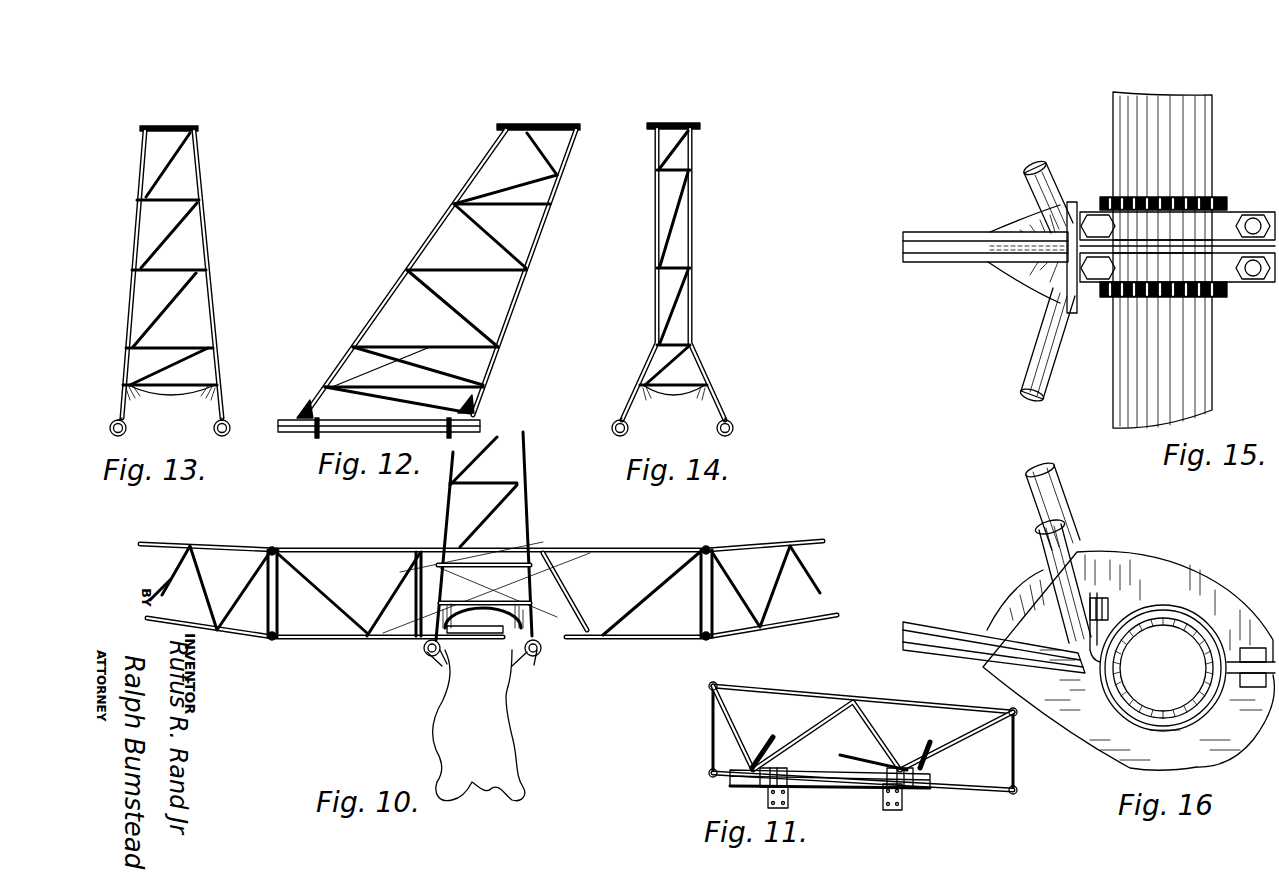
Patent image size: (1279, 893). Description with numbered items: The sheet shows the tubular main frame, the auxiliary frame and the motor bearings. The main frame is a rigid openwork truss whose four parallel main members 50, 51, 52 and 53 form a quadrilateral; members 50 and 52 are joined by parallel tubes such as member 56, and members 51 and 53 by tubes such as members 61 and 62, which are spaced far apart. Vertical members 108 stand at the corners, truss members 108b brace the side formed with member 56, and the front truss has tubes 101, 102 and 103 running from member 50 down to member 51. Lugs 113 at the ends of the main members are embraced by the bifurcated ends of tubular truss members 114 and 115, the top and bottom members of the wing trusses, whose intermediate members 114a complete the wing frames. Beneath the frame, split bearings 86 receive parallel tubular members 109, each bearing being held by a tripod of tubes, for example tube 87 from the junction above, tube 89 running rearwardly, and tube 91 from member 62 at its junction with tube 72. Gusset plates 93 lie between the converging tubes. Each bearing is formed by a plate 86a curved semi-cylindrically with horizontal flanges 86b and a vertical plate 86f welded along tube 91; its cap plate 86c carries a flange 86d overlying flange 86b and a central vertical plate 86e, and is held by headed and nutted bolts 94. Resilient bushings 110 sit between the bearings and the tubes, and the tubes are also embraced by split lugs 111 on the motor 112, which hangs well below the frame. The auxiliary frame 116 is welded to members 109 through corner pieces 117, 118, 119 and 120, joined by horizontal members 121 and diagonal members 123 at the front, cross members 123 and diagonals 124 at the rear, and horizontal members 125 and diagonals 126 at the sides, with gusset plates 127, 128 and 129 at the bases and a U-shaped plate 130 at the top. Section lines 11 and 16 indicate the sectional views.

In FIG. 10, the section line 11 is at (455, 545).
In FIG. 15, the section line 16 is at (1278, 393).
In FIG. 10, the main member 50 is at (590, 548).
In FIG. 11, the main member 50 is at (709, 677).
In FIG. 10, the main member 51 is at (635, 642).
In FIG. 11, the main member 51 is at (708, 775).
In FIG. 11, the main member 52 is at (1018, 713).
In FIG. 11, the main member 53 is at (1018, 790).
In FIG. 11, the connecting member 56 is at (845, 698).
In FIG. 10, the connecting member 61 is at (592, 640).
In FIG. 10, the connecting member 62 is at (370, 640).
In FIG. 10, the tube 72 is at (305, 640).
In FIG. 16, the split bearing 86 is at (1128, 671).
In FIG. 11, the split bearing 86 is at (760, 790).
In FIG. 15, the plate 86a is at (1073, 205).
In FIG. 16, the plate 86a is at (1190, 762).
In FIG. 16, the horizontal flange 86b is at (1265, 722).
In FIG. 16, the cap plate 86c is at (1200, 607).
In FIG. 15, the flange 86d is at (1268, 290).
In FIG. 16, the flange 86d is at (1264, 607).
In FIG. 15, the central vertical plate 86e is at (1177, 247).
In FIG. 16, the central vertical plate 86e is at (1185, 582).
In FIG. 16, the vertical plate 86f is at (1122, 755).
In FIG. 15, the tube 87 is at (1043, 160).
In FIG. 16, the tube 87 is at (1053, 478).
In FIG. 15, the tube 89 is at (1040, 350).
In FIG. 16, the tube 89 is at (1058, 536).
In FIG. 15, the tube 91 is at (908, 262).
In FIG. 16, the tube 91 is at (935, 630).
In FIG. 15, the gusset plate 93 is at (1040, 212).
In FIG. 16, the gusset plate 93 is at (1030, 605).
In FIG. 15, the bolt 94 is at (1248, 215).
In FIG. 16, the bolt 94 is at (1098, 598).
In FIG. 10, the tube 101 is at (322, 588).
In FIG. 10, the tube 102 is at (380, 598).
In FIG. 10, the tube 103 is at (568, 588).
In FIG. 10, the vertical member 108 is at (285, 583).
In FIG. 11, the vertical member 108 is at (710, 725).
In FIG. 11, the truss member 108b is at (730, 722).
In FIG. 13, the tubular member 109 is at (213, 428).
In FIG. 12, the tubular member 109 is at (378, 433).
In FIG. 14, the tubular member 109 is at (716, 428).
In FIG. 15, the tubular member 109 is at (1212, 338).
In FIG. 10, the tubular member 109 is at (424, 650).
In FIG. 11, the tubular member 109 is at (798, 787).
In FIG. 15, the tubular bushing 110 is at (1215, 292).
In FIG. 16, the tubular bushing 110 is at (1150, 612).
In FIG. 10, the bearing lug 111 is at (432, 658).
In FIG. 11, the bearing lug 111 is at (788, 806).
In FIG. 10, the motor 112 is at (497, 710).
In FIG. 10, the lug 113 is at (274, 546).
In FIG. 10, the tubular truss member 114 is at (232, 540).
In FIG. 10, the intermediate member 114a is at (183, 575).
In FIG. 10, the tubular truss member 115 is at (200, 630).
In FIG. 12, the auxiliary frame 116 is at (624, 313).
In FIG. 13, the corner piece 117 is at (210, 292).
In FIG. 12, the corner piece 117 is at (422, 250).
In FIG. 10, the corner piece 117 is at (527, 505).
In FIG. 11, the corner piece 117 is at (783, 730).
In FIG. 13, the corner piece 118 is at (130, 318).
In FIG. 10, the corner piece 118 is at (448, 520).
In FIG. 12, the corner piece 119 is at (530, 252).
In FIG. 14, the corner piece 119 is at (655, 212).
In FIG. 11, the corner piece 119 is at (933, 740).
In FIG. 14, the corner piece 120 is at (693, 222).
In FIG. 13, the horizontal member 121 is at (185, 262).
In FIG. 13, the diagonal member 123 is at (180, 160).
In FIG. 14, the diagonal member 123 is at (670, 343).
In FIG. 14, the diagonal member 124 is at (675, 148).
In FIG. 12, the horizontal member 125 is at (437, 295).
In FIG. 12, the diagonal member 126 is at (535, 195).
In FIG. 11, the diagonal member 126 is at (855, 752).
In FIG. 13, the gusset plate 127 is at (124, 398).
In FIG. 12, the gusset plate 127 is at (300, 405).
In FIG. 14, the gusset plate 127 is at (725, 408).
In FIG. 14, the gusset plate 128 is at (645, 392).
In FIG. 13, the gusset plate 129 is at (148, 393).
In FIG. 13, the U-shaped plate 130 is at (178, 127).
In FIG. 12, the U-shaped plate 130 is at (597, 108).
In FIG. 14, the U-shaped plate 130 is at (662, 123).